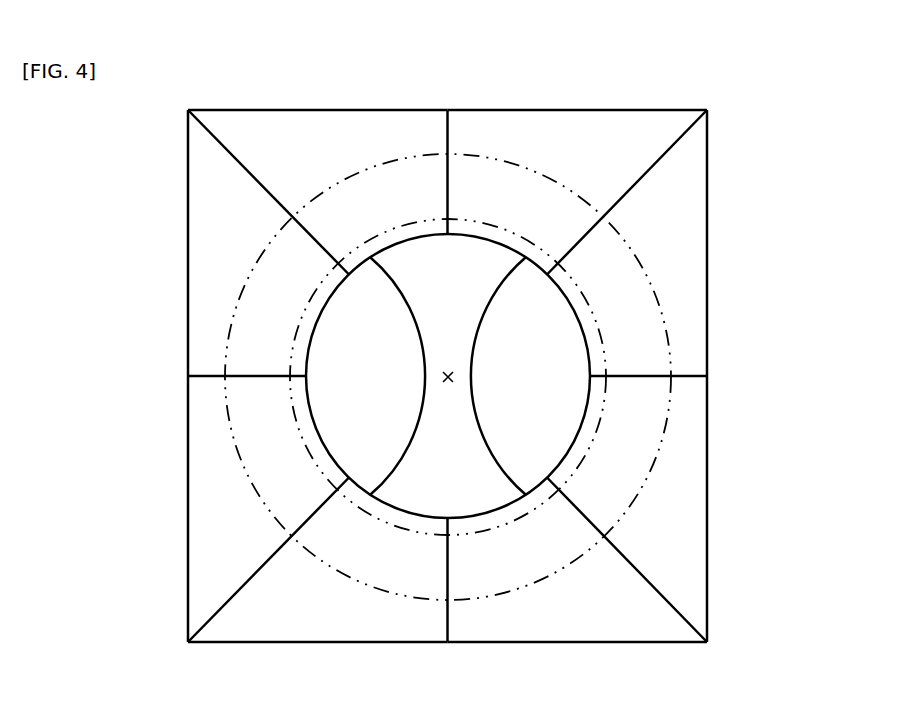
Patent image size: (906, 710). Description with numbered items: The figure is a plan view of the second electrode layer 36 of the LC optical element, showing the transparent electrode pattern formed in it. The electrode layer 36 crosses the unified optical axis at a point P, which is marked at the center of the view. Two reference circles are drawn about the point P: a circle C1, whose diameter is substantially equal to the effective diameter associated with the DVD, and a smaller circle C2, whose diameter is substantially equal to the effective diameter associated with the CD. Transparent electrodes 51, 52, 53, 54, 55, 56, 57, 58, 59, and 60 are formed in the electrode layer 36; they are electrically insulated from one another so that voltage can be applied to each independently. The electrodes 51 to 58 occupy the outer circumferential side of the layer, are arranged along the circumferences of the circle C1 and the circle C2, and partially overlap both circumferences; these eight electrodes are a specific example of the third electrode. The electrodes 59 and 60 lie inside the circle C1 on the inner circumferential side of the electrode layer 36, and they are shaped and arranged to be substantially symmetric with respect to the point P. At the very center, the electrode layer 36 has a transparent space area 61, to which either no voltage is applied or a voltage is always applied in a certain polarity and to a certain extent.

The electrode layer 36 is at (708, 109).
The transparent electrode 51 is at (303, 124).
The transparent electrode 52 is at (585, 124).
The transparent electrode 53 is at (704, 240).
The transparent electrode 54 is at (704, 577).
The transparent electrode 55 is at (591, 627).
The transparent electrode 56 is at (302, 627).
The transparent electrode 57 is at (196, 491).
The transparent electrode 58 is at (196, 244).
The transparent electrode 59 is at (333, 345).
The transparent electrode 60 is at (537, 340).
The space area 61 is at (465, 495).
The circle C1 is at (635, 497).
The circle C2 is at (598, 433).
The point P is at (447, 394).